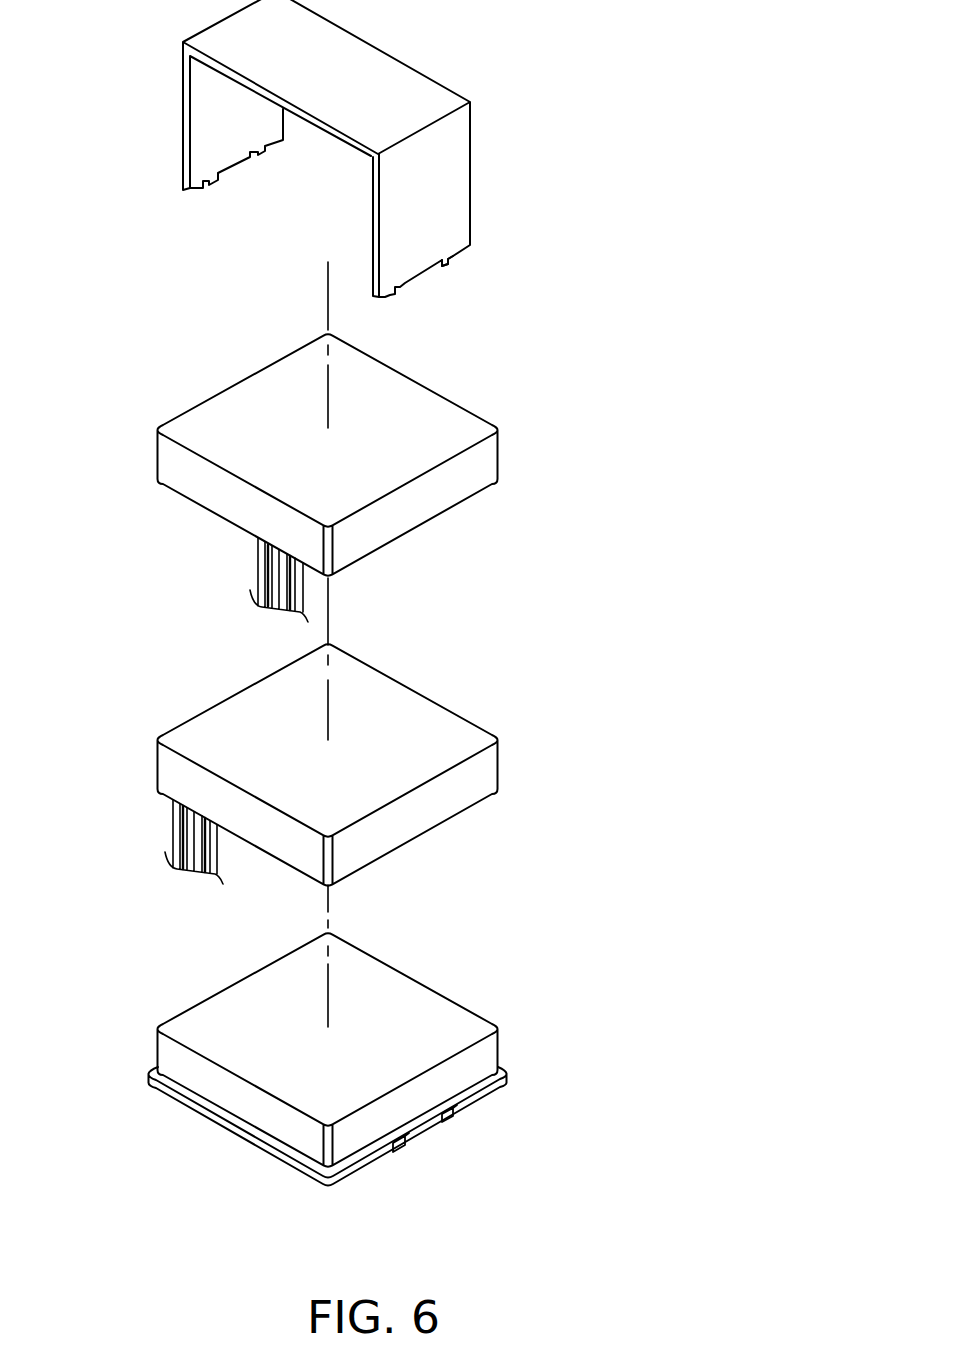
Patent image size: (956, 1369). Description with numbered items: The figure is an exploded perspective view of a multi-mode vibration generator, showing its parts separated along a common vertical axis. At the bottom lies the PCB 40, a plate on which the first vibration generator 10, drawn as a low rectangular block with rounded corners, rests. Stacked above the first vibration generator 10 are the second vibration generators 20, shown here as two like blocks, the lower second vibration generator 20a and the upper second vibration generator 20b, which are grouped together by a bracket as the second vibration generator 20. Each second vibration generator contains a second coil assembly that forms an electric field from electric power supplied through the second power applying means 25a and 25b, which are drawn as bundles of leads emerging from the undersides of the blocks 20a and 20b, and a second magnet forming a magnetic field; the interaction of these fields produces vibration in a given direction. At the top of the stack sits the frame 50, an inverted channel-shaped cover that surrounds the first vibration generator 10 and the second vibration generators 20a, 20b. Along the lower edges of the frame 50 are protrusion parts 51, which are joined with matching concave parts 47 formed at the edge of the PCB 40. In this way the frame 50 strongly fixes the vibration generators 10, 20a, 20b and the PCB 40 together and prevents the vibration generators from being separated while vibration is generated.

The frame 50 is at (462, 160).
The protrusion part 51 is at (458, 262).
The second vibration generator 20 is at (375, 609).
The second vibration generator 20a is at (490, 765).
The second vibration generator 20b is at (490, 450).
The second power applying means 25a is at (200, 845).
The second power applying means 25b is at (280, 580).
The first vibration generator 10 is at (487, 1053).
The PCB 40 is at (245, 1140).
The concave part 47 is at (447, 1122).